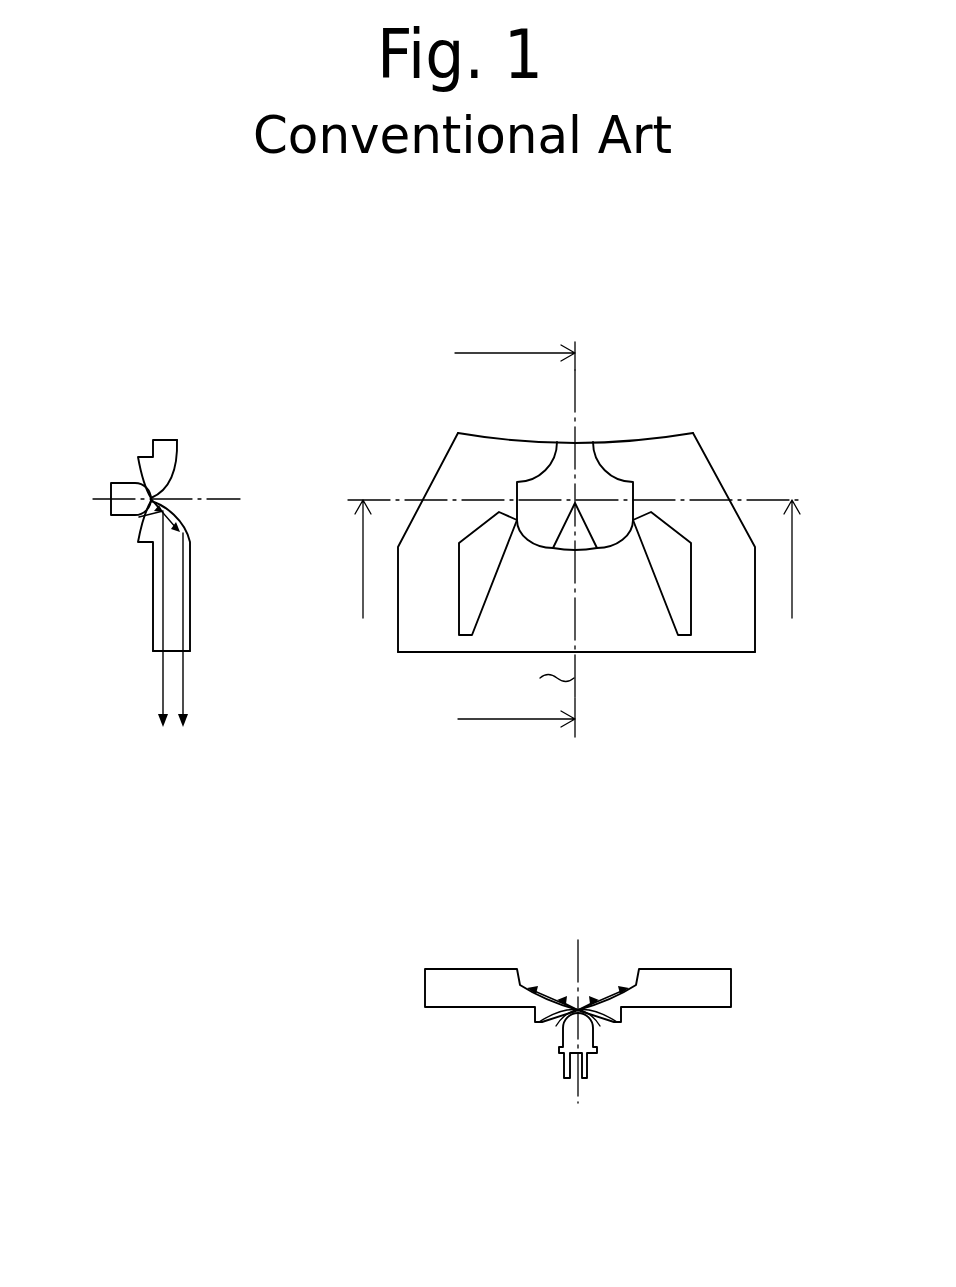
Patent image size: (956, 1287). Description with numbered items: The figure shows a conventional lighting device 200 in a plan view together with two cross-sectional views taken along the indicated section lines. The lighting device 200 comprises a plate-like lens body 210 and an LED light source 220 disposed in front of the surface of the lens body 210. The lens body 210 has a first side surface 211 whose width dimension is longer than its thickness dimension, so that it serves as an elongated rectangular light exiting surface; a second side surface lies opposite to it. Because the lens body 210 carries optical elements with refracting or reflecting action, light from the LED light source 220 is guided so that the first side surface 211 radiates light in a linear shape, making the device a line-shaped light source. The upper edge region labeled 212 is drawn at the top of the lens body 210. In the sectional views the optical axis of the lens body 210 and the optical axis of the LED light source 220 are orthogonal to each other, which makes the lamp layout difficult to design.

The lighting device 200 is at (660, 296).
The lens body 210 is at (740, 448).
The first side surface 211 is at (673, 653).
The top light exit surface of lens 212 is at (657, 432).
The LED light source 220 is at (128, 490).